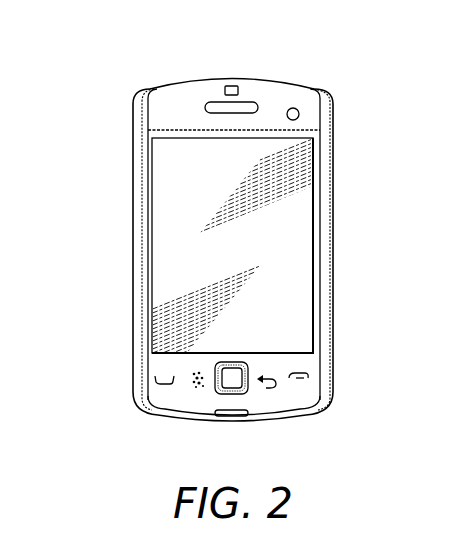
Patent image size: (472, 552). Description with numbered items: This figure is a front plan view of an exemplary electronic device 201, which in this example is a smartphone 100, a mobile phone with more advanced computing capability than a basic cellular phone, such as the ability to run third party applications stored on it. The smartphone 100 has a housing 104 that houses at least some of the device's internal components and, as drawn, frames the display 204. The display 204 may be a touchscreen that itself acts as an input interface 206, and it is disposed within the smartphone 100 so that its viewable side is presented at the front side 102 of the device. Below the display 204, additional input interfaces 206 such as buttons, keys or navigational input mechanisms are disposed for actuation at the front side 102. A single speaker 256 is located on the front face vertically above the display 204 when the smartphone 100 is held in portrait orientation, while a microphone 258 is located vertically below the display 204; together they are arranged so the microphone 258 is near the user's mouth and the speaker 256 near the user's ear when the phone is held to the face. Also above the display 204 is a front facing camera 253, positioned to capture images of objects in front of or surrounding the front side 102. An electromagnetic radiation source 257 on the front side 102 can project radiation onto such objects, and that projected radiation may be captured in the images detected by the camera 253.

The smartphone 100 is at (120, 78).
The electronic device 201 is at (167, 47).
The housing 104 is at (334, 146).
The display 204 is at (151, 193).
The input interface 206 is at (151, 271).
The front side 102 is at (149, 366).
The front facing camera 253 is at (231, 86).
The speaker 256 is at (254, 101).
The electromagnetic radiation source 257 is at (299, 113).
The microphone 258 is at (230, 417).